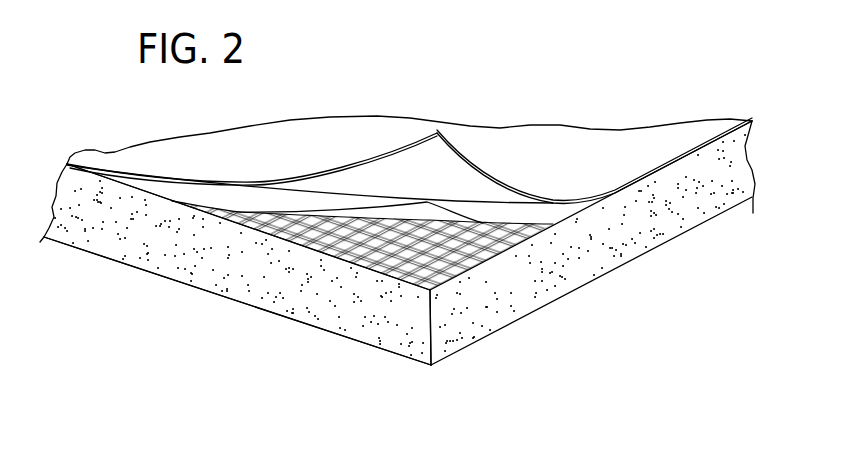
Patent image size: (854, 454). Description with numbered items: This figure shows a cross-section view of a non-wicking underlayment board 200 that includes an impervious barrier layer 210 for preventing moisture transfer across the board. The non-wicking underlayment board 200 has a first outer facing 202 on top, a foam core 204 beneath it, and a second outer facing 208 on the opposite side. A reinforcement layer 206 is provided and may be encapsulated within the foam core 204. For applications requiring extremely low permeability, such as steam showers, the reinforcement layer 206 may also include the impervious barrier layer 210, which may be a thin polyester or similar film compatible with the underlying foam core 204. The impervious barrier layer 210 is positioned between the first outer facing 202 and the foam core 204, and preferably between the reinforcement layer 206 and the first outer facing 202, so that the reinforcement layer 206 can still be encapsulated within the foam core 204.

The non-wicking underlayment board 200 is at (588, 65).
The first outer facing 202 is at (377, 160).
The foam core 204 is at (665, 218).
The reinforcement layer 206 is at (330, 246).
The second outer facing 208 is at (431, 366).
The impervious barrier layer 210 is at (430, 212).